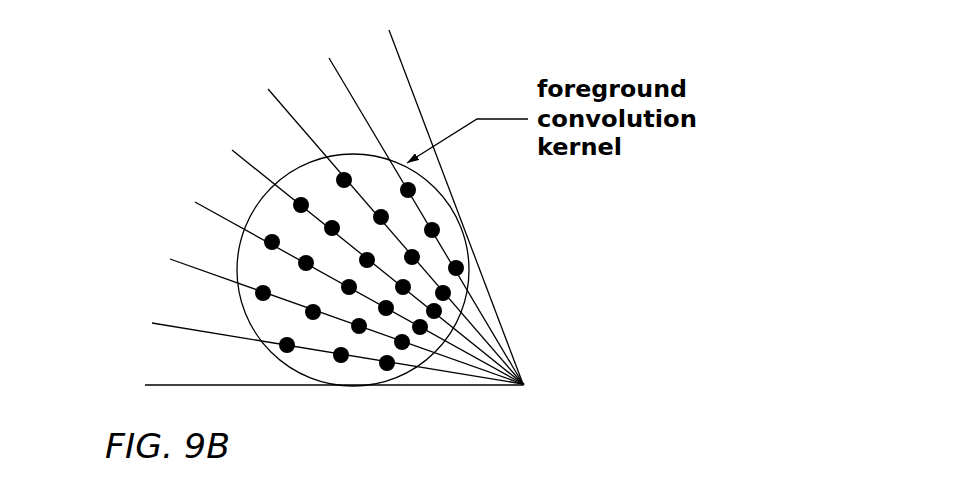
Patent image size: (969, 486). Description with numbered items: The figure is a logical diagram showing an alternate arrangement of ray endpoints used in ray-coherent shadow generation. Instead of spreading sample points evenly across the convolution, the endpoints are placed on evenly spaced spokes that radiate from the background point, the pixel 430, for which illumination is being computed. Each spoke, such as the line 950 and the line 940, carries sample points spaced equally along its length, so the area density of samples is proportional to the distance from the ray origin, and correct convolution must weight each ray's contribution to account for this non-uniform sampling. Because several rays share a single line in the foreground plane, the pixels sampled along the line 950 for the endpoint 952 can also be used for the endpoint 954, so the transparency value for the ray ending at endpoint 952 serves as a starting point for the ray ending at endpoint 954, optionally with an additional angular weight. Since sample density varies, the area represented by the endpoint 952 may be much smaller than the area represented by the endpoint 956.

The line 950 is at (286, 221).
The line from pixel 940 is at (513, 207).
The pixel 430 is at (649, 351).
The ray endpoint 956 is at (263, 243).
The ray endpoint 952 is at (461, 381).
The ray endpoint 954 is at (412, 386).